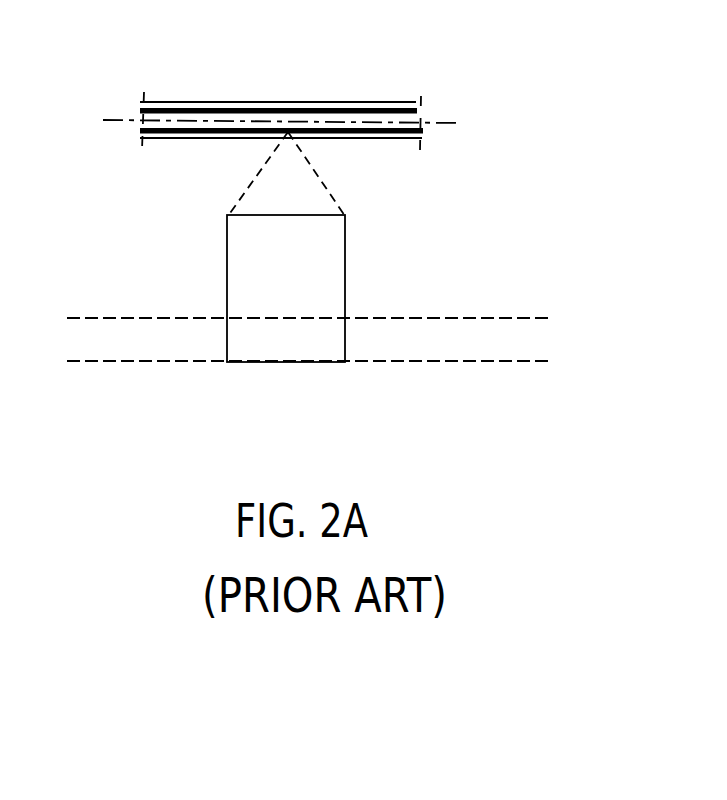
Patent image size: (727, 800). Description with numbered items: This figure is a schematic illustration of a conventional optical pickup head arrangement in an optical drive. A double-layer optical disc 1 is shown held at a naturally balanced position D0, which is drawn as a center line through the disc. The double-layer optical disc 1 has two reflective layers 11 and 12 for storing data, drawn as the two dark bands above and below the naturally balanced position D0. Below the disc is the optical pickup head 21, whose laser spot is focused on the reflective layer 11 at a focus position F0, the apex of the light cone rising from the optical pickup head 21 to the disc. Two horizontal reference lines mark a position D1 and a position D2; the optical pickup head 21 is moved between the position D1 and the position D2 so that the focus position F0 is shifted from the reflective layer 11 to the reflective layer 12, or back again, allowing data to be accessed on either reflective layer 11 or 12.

The double-layer optical disc 1 is at (239, 104).
The reflective layer 12 is at (140, 108).
The reflective layer 11 is at (140, 134).
The optical pickup head 21 is at (235, 267).
The focus position F0 is at (290, 133).
The naturally balanced position D0 is at (302, 124).
The position D1 is at (343, 359).
The position D2 is at (343, 316).